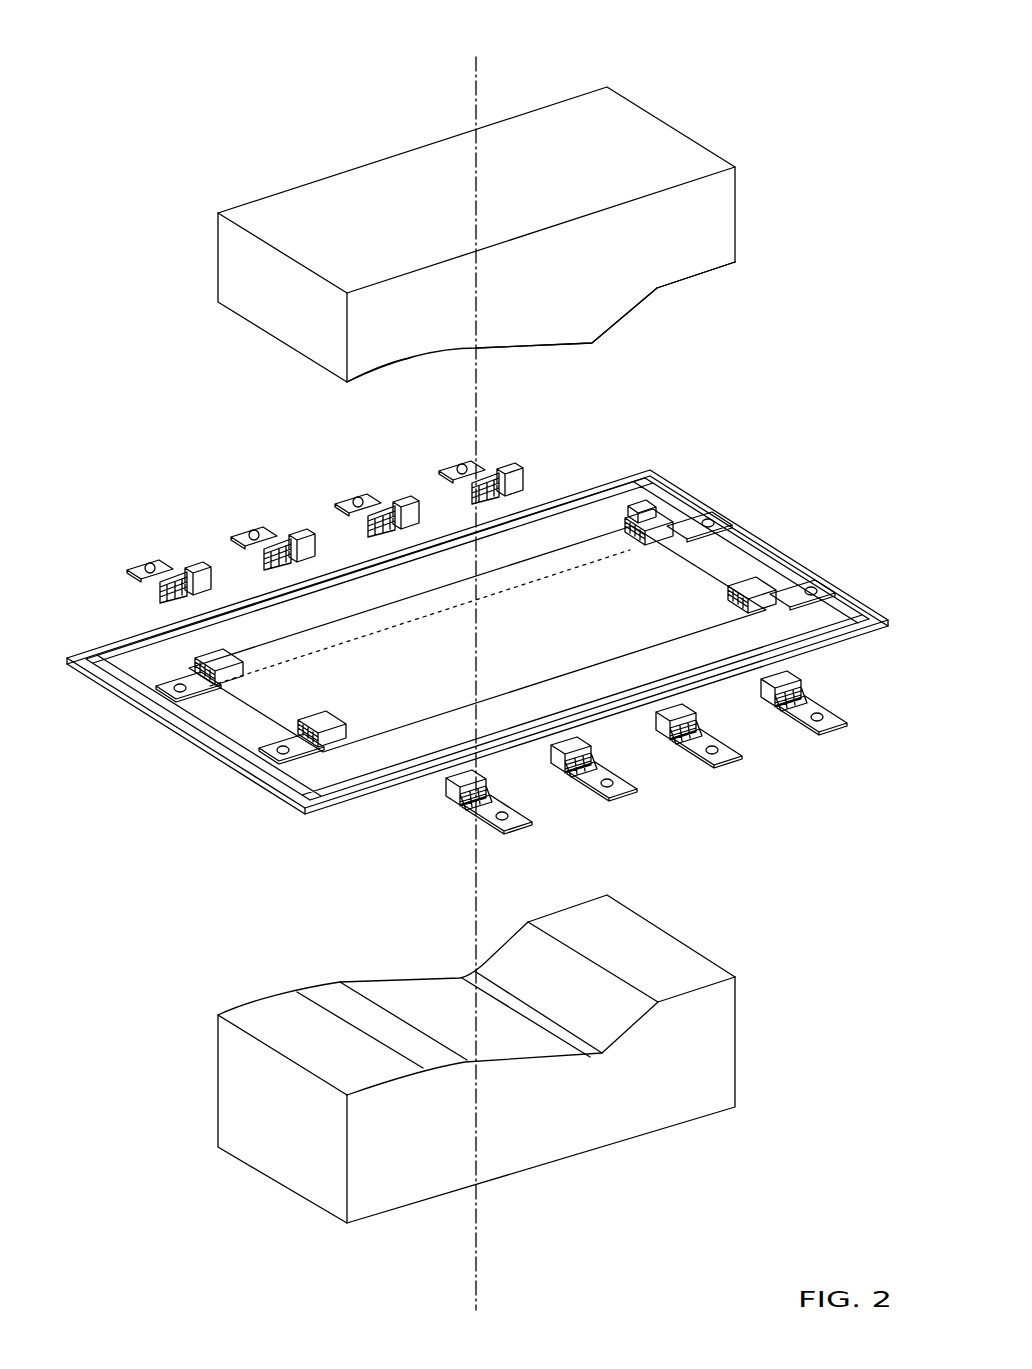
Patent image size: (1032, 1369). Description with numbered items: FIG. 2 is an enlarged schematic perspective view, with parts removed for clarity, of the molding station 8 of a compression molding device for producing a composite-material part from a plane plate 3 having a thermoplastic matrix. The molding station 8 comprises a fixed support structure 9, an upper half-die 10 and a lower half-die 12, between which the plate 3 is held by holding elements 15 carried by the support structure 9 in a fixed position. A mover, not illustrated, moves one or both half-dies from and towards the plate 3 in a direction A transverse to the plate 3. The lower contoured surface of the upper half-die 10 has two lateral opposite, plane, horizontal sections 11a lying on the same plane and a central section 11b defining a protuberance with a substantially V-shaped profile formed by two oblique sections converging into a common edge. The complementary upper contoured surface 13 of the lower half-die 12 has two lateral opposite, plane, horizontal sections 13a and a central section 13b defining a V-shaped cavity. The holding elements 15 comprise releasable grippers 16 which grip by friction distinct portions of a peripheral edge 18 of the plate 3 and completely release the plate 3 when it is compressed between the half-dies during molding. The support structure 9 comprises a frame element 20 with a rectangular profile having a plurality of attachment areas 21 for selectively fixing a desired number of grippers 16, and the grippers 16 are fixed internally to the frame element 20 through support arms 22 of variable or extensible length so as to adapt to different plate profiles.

The direction A is at (472, 72).
The plane plate 3 is at (443, 610).
The molding station 8 is at (683, 90).
The fixed support structure 9 is at (476, 632).
The upper half-die 10 is at (305, 217).
The lateral sections 11a is at (708, 277).
The central section 11b is at (592, 345).
The lower half-die 12 is at (493, 1084).
The upper contoured surface 13 is at (290, 1033).
The lateral sections 13a is at (668, 967).
The central section 13b is at (573, 1043).
The holding elements 15 is at (476, 632).
The releasable grippers 16 is at (193, 562).
The peripheral edge 18 is at (640, 508).
The frame element 20 is at (860, 632).
The attachment areas 21 is at (158, 615).
The support arms 22 is at (152, 565).